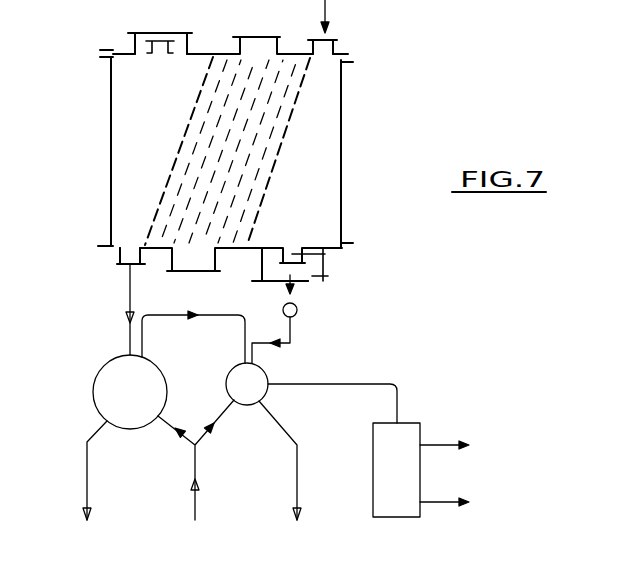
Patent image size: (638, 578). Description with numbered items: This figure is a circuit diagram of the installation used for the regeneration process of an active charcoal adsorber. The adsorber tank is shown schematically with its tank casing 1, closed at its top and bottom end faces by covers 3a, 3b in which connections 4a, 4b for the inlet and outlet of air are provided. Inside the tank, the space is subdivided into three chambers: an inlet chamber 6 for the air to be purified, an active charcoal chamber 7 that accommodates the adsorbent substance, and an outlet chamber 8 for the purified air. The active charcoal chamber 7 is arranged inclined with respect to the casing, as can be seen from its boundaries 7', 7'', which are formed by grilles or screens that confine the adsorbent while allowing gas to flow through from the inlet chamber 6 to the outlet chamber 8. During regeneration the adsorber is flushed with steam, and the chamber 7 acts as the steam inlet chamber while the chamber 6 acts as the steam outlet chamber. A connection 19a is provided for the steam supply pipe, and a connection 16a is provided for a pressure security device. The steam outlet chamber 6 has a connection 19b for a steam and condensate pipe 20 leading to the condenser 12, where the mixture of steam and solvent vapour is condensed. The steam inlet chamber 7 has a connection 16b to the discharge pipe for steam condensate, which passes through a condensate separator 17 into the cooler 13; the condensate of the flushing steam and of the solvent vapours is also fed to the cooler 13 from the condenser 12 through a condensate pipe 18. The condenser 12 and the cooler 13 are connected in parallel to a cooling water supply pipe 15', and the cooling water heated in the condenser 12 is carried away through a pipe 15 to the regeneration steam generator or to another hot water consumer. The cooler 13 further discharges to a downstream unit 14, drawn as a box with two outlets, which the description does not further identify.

The tank casing 1 is at (343, 117).
The cover 3a is at (100, 52).
The cover 3b is at (263, 278).
The connection 4a is at (131, 43).
The connection 4b is at (328, 276).
The inlet chamber 6 is at (124, 170).
The active charcoal chamber 7 is at (222, 151).
The chamber boundary 7' is at (137, 151).
The chamber boundary 7'' is at (315, 151).
The outlet chamber 8 is at (322, 177).
The condenser 12 is at (107, 388).
The cooler 13 is at (237, 385).
The separator unit 14 is at (386, 468).
The pipe 15 is at (71, 470).
The cooling water supply pipe 15' is at (200, 460).
The connection 16a is at (159, 42).
The connection 16b is at (325, 253).
The condensate separator 17 is at (297, 311).
The condensate pipe 18 is at (166, 320).
The connection 19a is at (326, 50).
The connection 19b is at (130, 256).
The steam and condensate pipe 20 is at (130, 298).